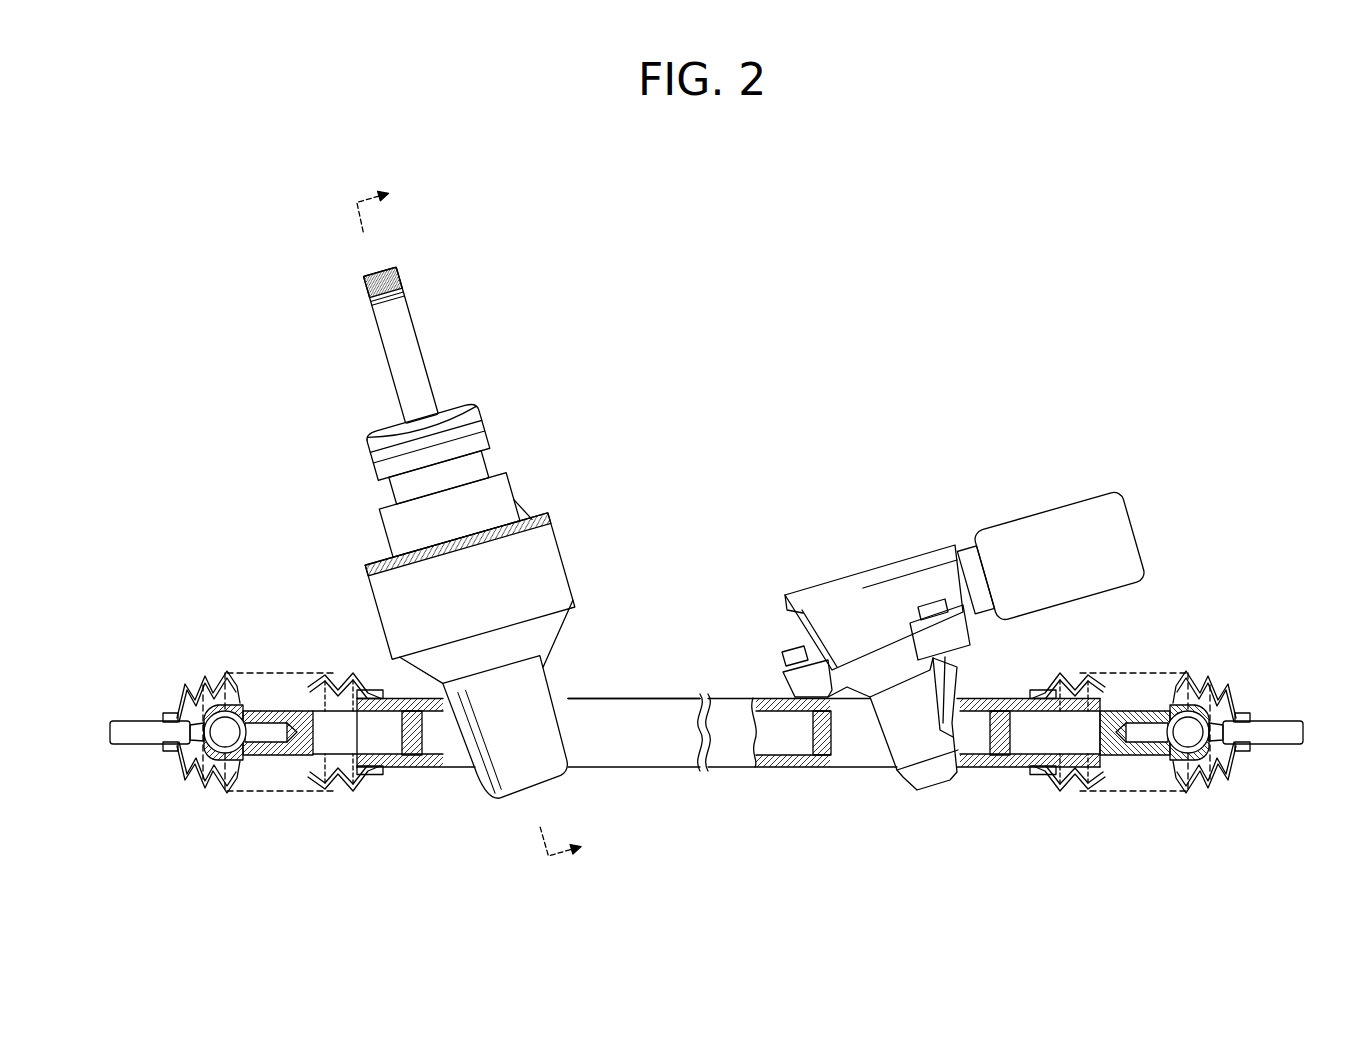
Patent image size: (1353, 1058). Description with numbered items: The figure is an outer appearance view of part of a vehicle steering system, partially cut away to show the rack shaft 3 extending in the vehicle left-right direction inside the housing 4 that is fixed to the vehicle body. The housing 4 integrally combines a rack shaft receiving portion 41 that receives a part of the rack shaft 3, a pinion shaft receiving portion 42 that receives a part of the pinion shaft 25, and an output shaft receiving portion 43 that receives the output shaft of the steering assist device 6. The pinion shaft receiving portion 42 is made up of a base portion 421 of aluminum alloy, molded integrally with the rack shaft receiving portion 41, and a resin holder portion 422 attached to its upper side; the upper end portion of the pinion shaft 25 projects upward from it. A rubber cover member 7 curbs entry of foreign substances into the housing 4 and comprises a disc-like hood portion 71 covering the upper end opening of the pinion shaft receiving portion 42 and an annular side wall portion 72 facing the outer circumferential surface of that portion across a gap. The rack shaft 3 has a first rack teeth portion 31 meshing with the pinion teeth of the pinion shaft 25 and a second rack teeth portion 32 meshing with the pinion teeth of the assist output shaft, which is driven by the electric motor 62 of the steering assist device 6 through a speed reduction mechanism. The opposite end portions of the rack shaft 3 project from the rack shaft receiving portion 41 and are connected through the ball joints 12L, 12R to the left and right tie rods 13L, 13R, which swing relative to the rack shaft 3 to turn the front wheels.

The rack shaft 3 is at (820, 768).
The first rack teeth portion 31 is at (416, 760).
The second rack teeth portion 32 is at (818, 737).
The housing 4 is at (648, 769).
The rack shaft receiving portion 41 is at (678, 707).
The pinion shaft receiving portion 42 is at (499, 627).
The base portion 421 is at (492, 664).
The holder portion 422 is at (507, 507).
The output shaft receiving portion 43 is at (908, 755).
The steering assist device 6 is at (784, 579).
The electric motor 62 is at (1078, 500).
The cover member 7 is at (391, 441).
The hood portion 71 is at (405, 427).
The side wall portion 72 is at (429, 450).
The ball joint 12R is at (240, 773).
The ball joint 12L is at (1173, 772).
The tie rod 13R is at (152, 722).
The tie rod 13L is at (1270, 718).
The pinion shaft 25 is at (417, 333).